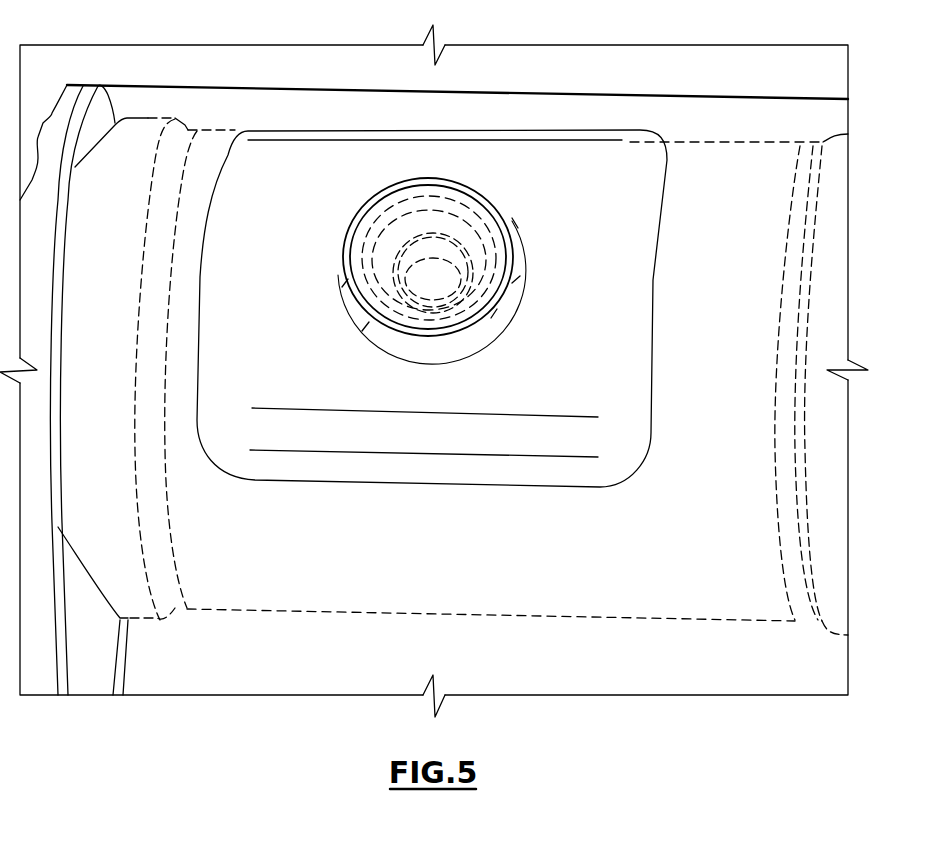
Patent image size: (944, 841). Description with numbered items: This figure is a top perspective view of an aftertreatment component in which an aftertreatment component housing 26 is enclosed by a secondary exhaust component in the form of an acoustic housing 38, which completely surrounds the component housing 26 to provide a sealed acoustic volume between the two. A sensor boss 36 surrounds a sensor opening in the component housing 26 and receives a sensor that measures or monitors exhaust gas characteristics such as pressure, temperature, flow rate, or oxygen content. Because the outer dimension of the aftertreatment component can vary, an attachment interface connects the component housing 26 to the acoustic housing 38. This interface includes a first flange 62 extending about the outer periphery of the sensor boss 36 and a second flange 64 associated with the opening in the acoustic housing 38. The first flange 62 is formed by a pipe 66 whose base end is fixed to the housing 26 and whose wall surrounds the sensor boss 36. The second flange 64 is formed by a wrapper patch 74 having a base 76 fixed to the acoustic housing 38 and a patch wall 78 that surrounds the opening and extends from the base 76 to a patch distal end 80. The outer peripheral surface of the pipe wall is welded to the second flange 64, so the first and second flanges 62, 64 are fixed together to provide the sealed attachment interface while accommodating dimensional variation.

The aftertreatment component housing 26 is at (772, 157).
The sensor boss 36 is at (450, 250).
The acoustic housing 38 is at (772, 110).
The first flange 62 is at (403, 197).
The second flange 64 is at (477, 330).
The pipe 66 is at (447, 207).
The wrapper patch 74 is at (279, 148).
The base 76 is at (248, 424).
The patch wall 78 is at (495, 302).
The patch distal end 80 is at (380, 207).